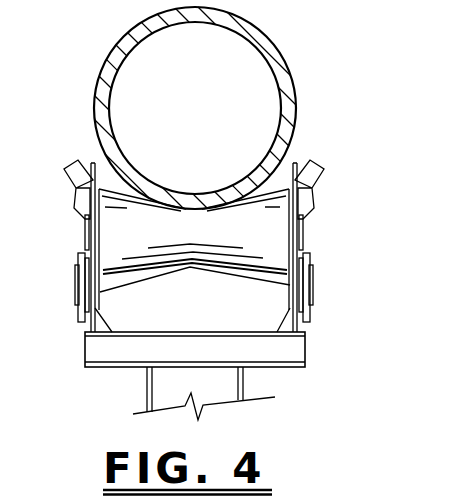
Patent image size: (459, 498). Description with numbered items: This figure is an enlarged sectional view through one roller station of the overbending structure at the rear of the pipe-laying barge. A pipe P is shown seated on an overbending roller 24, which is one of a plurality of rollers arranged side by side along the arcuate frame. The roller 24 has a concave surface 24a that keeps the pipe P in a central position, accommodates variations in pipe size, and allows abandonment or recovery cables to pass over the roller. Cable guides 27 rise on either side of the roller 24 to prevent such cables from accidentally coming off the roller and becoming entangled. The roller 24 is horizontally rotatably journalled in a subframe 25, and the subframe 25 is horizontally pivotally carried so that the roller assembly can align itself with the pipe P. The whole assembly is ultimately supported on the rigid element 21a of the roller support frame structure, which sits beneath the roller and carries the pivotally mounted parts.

The pipe P is at (262, 55).
The overbending roller 24 is at (185, 268).
The concave surface 24a is at (291, 180).
The subframe 25 is at (86, 233).
The cable guide 27 is at (75, 163).
The rigid element 21a is at (293, 348).